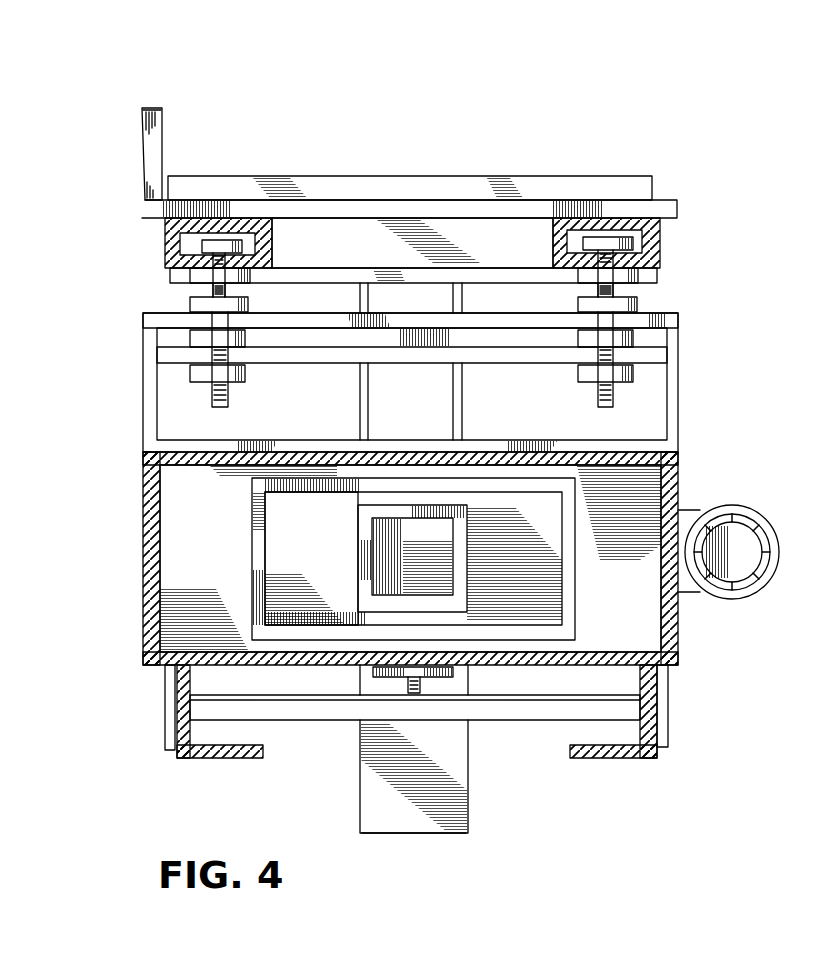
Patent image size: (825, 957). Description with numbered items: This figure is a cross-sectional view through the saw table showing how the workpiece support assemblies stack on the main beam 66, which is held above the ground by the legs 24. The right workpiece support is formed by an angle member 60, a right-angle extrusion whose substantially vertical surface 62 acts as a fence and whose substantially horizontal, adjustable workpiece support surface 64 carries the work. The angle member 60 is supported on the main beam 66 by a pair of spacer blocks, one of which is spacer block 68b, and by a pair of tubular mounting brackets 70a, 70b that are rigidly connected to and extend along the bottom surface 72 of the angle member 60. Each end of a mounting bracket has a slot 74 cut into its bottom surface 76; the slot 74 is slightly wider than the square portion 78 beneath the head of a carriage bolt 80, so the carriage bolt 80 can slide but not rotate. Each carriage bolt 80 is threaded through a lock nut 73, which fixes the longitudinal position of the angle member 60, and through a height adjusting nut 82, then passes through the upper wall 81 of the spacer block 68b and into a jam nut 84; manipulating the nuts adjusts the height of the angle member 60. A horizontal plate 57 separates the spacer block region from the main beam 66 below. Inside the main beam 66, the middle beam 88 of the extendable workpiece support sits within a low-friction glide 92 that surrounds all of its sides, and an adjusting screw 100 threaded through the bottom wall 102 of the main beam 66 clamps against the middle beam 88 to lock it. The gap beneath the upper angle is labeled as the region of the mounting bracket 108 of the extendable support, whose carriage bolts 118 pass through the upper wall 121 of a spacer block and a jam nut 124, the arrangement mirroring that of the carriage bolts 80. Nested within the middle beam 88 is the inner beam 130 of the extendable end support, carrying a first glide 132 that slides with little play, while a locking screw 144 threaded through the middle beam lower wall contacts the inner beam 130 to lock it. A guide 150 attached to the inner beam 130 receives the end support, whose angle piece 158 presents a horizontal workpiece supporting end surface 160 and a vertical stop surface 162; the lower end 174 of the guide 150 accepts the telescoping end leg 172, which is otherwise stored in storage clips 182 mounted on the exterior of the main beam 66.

The legs 24 is at (183, 760).
The partition plate 57 is at (580, 452).
The angle member 60 is at (142, 140).
The vertical surface 62 is at (162, 122).
The workpiece support surface 64 is at (664, 200).
The main beam 66 is at (679, 650).
The spacer block 68b is at (680, 388).
The mounting bracket 70a is at (660, 243).
The mounting bracket 70b is at (165, 249).
The bottom surface 72 is at (483, 218).
The lock nut 73 is at (240, 290).
The slot 74 is at (262, 256).
The bottom surface 76 is at (178, 276).
The square portion 78 is at (200, 250).
The carriage bolt 80 is at (222, 246).
The upper wall 81 is at (157, 327).
The height adjusting nut 82 is at (190, 305).
The jam nut 84 is at (193, 340).
The middle beam 88 is at (576, 608).
The glide 92 is at (616, 560).
The adjusting screw 100 is at (372, 695).
The bottom wall 102 is at (156, 668).
The mounting bracket 108 is at (352, 248).
The carriage bolt 118 is at (228, 400).
The upper wall 121 is at (335, 357).
The jam nut 124 is at (245, 376).
The inner beam 130 is at (467, 570).
The first glide 132 is at (315, 545).
The locking screw 144 is at (455, 673).
The guide 150 is at (469, 775).
The angle piece 158 is at (384, 176).
The workpiece supporting end surface 160 is at (483, 176).
The stop surface 162 is at (322, 182).
The end leg 172 is at (770, 522).
The lower end 174 is at (365, 833).
The storage clips 182 is at (695, 508).